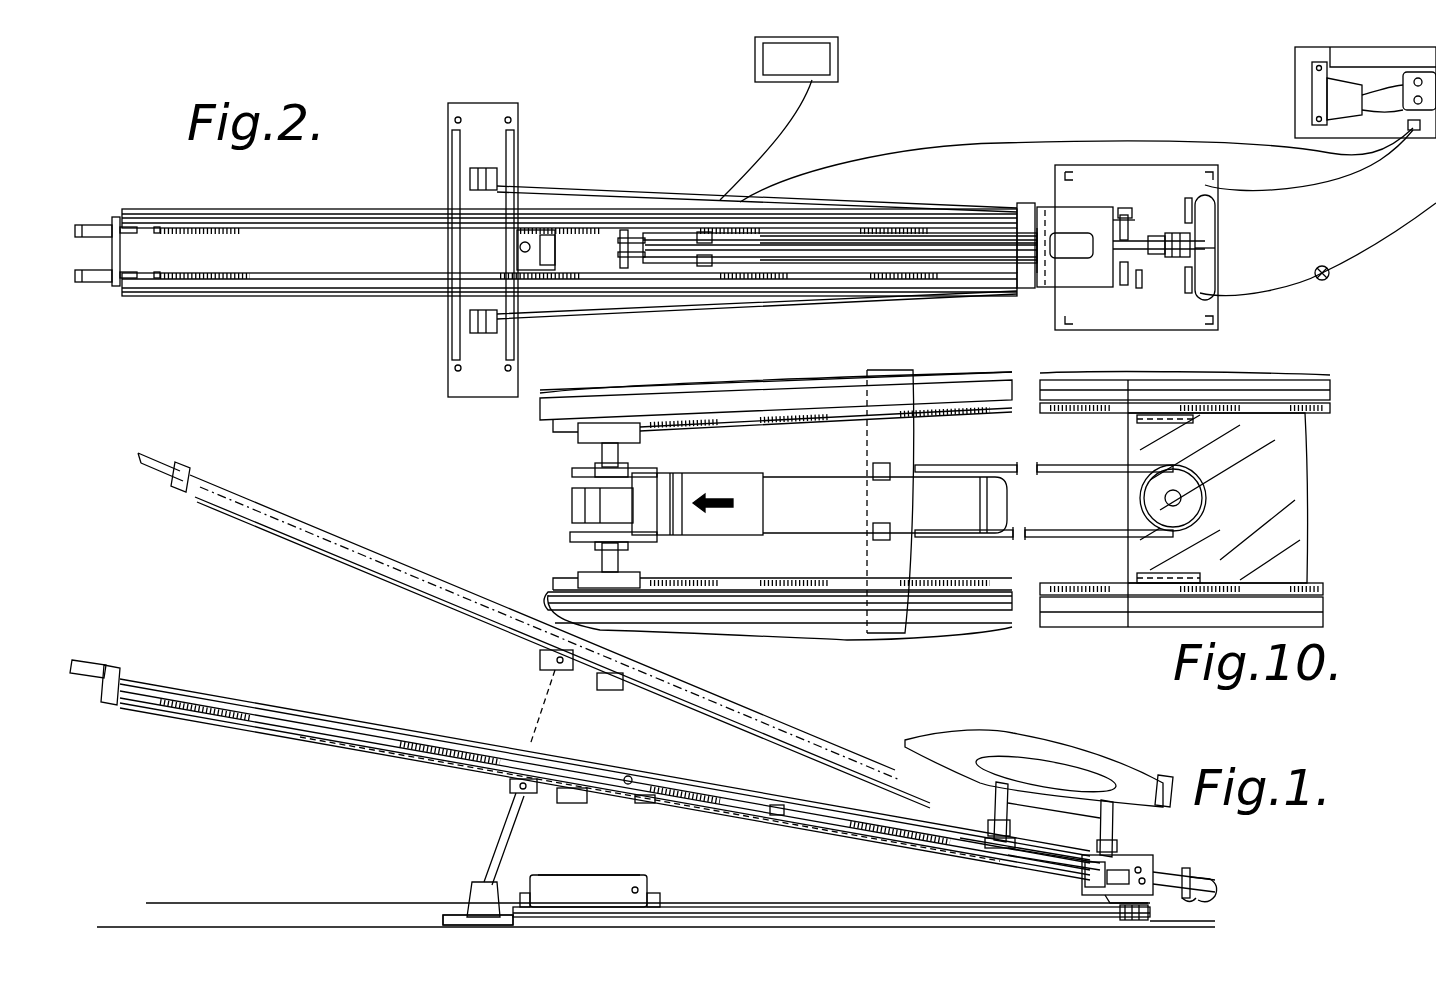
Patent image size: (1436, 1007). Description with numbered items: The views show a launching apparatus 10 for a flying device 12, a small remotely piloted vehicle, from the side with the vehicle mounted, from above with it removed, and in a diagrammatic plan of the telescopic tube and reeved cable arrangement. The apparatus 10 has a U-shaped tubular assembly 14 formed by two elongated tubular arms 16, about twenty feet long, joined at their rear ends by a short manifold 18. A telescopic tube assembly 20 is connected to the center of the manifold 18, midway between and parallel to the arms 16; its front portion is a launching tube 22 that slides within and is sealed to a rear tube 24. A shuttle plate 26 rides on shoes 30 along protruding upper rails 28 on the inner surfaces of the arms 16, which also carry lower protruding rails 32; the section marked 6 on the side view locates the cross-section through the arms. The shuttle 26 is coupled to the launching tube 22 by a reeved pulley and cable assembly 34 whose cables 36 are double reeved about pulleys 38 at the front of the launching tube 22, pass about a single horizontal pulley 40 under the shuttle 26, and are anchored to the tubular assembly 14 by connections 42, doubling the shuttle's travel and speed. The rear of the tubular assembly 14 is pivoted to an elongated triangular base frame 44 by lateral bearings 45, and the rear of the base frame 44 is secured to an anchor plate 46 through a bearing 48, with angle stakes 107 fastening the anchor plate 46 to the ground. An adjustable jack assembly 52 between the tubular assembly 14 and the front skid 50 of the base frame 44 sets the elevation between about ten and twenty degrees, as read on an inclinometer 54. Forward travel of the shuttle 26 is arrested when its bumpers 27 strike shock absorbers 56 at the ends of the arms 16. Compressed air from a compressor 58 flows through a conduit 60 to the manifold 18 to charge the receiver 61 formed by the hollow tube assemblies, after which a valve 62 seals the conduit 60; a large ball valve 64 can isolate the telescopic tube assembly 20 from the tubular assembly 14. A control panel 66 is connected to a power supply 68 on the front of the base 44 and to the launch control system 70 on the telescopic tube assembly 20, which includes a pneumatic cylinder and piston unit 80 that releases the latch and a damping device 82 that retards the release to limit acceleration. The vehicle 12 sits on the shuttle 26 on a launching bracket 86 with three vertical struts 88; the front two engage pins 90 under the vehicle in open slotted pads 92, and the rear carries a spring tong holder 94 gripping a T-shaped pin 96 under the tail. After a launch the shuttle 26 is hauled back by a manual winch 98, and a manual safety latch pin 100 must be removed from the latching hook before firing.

In FIG. 2, the launching apparatus 10 is at (416, 196).
In FIG. 1, the launching apparatus 10 is at (444, 840).
In FIG. 1, the flying device 12 is at (1038, 760).
In FIG. 2, the U-shaped tubular assembly 14 is at (891, 298).
In FIG. 1, the U-shaped tubular assembly 14 is at (792, 800).
In FIG. 2, the tubular arms 16 is at (608, 208).
In FIG. 10, the tubular arms 16 is at (1070, 378).
In FIG. 1, the tubular arms 16 is at (742, 712).
In FIG. 2, the manifold 18 is at (1210, 235).
In FIG. 1, the manifold 18 is at (1212, 880).
In FIG. 2, the telescopic tube assembly 20 is at (823, 227).
In FIG. 10, the telescopic tube assembly 20 is at (784, 541).
In FIG. 2, the launching tube 22 is at (700, 222).
In FIG. 10, the launching tube 22 is at (745, 495).
In FIG. 2, the rear tube 24 is at (800, 250).
In FIG. 10, the rear tube 24 is at (785, 500).
In FIG. 10, the shuttle plate 26 is at (1312, 504).
In FIG. 1, the shuttle plate 26 is at (1046, 846).
In FIG. 1, the bumpers 27 is at (1000, 829).
In FIG. 2, the upper rails 28 is at (903, 265).
In FIG. 10, the upper rails 28 is at (1082, 414).
In FIG. 10, the shoes 30 is at (1140, 426).
In FIG. 1, the shoes 30 is at (1054, 836).
In FIG. 2, the lower protruding rails 32 is at (882, 227).
In FIG. 10, the lower protruding rails 32 is at (1005, 421).
In FIG. 1, the reeved pulley and cable assembly 34 is at (648, 806).
In FIG. 2, the cables 36 is at (697, 258).
In FIG. 10, the cables 36 is at (690, 473).
In FIG. 1, the cables 36 is at (840, 828).
In FIG. 2, the pulleys 38 is at (618, 253).
In FIG. 10, the pulleys 38 is at (572, 535).
In FIG. 1, the pulleys 38 is at (628, 776).
In FIG. 2, the horizontal pulley 40 is at (1035, 300).
In FIG. 10, the horizontal pulley 40 is at (1185, 489).
In FIG. 1, the horizontal pulley 40 is at (1000, 858).
In FIG. 2, the connections 42 is at (714, 263).
In FIG. 10, the connections 42 is at (873, 468).
In FIG. 1, the connections 42 is at (775, 815).
In FIG. 2, the base frame 44 is at (655, 201).
In FIG. 1, the base frame 44 is at (900, 908).
In FIG. 1, the lateral bearings 45 is at (1125, 903).
In FIG. 2, the anchor plate 46 is at (1145, 320).
In FIG. 1, the anchor plate 46 is at (1186, 926).
In FIG. 1, the bearing 48 is at (1150, 918).
In FIG. 2, the front skid 50 is at (521, 152).
In FIG. 1, the front skid 50 is at (461, 906).
In FIG. 2, the adjustable jack assembly 52 is at (526, 244).
In FIG. 1, the adjustable jack assembly 52 is at (505, 822).
In FIG. 1, the inclinometer 54 is at (615, 690).
In FIG. 2, the shock absorbers 56 is at (100, 238).
In FIG. 1, the shock absorbers 56 is at (93, 689).
In FIG. 2, the compressor 58 is at (1298, 66).
In FIG. 2, the tubular conduit 60 is at (1250, 297).
In FIG. 1, the tubular conduit 60 is at (1210, 900).
In FIG. 2, the receiver 61 is at (1216, 255).
In FIG. 2, the valve 62 is at (1328, 280).
In FIG. 2, the ball valve 64 is at (1175, 234).
In FIG. 1, the ball valve 64 is at (1186, 862).
In FIG. 2, the control panel 66 is at (835, 58).
In FIG. 1, the power supply 68 is at (635, 888).
In FIG. 2, the launch control system 70 is at (1123, 199).
In FIG. 2, the pneumatic cylinder and piston unit 80 is at (1130, 285).
In FIG. 1, the pneumatic cylinder and piston unit 80 is at (1145, 870).
In FIG. 2, the damping device 82 is at (1125, 280).
In FIG. 1, the launching bracket 86 is at (998, 811).
In FIG. 2, the vertical struts 88 is at (1115, 235).
In FIG. 1, the vertical struts 88 is at (1105, 839).
In FIG. 1, the pins 90 is at (998, 786).
In FIG. 2, the open slotted pads 92 is at (1058, 200).
In FIG. 1, the open slotted pads 92 is at (1012, 810).
In FIG. 1, the spring tong holder 94 is at (1110, 862).
In FIG. 1, the T-shaped pin 96 is at (1102, 812).
In FIG. 2, the manual winch 98 is at (1128, 215).
In FIG. 2, the manual safety latch pin 100 is at (1130, 290).
In FIG. 2, the angle stakes 107 is at (1212, 180).
In FIG. 1, the section line 6- 6 is at (447, 780).